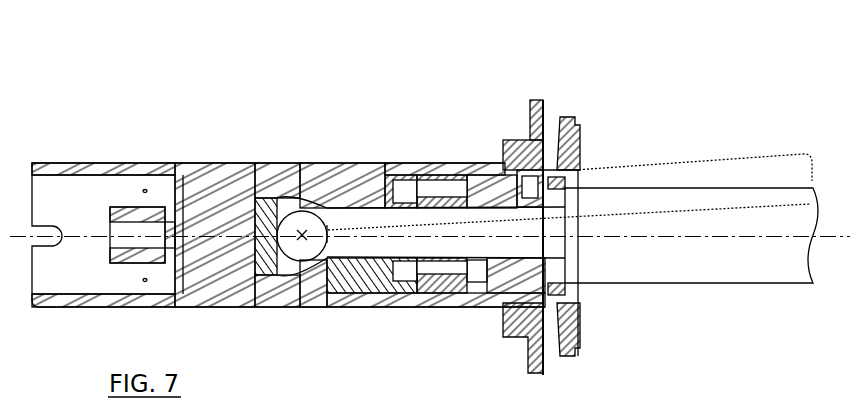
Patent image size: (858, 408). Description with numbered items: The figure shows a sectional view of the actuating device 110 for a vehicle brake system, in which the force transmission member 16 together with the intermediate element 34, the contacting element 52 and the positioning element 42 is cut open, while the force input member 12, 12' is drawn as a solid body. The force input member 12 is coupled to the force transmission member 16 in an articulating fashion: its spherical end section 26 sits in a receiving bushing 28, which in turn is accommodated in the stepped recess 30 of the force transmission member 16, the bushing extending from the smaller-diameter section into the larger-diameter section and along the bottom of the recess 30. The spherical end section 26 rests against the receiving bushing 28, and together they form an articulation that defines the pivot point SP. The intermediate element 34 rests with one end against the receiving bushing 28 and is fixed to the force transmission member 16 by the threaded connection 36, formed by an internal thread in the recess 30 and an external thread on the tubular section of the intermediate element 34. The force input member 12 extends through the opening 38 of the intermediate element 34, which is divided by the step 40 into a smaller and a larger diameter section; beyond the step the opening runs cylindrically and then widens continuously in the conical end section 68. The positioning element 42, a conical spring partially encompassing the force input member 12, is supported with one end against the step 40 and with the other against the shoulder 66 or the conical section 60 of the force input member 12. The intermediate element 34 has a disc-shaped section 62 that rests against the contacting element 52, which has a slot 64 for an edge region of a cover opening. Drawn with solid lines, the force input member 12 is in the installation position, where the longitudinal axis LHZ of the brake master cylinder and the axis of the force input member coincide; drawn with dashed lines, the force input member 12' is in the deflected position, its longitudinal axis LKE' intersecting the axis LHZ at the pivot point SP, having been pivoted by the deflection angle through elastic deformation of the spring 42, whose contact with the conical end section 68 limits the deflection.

The force input member 12 is at (691, 266).
The force input member in deflected position 12' is at (575, 164).
The force transmission member 16 is at (278, 174).
The spherical end section 26 is at (312, 262).
The receiving bushing 28 is at (274, 272).
The recess 30 is at (373, 195).
The intermediate element 34 is at (534, 103).
The threaded connection 36 is at (432, 293).
The opening 38 is at (429, 180).
The step 40 is at (462, 180).
The positioning element 42 is at (468, 293).
The contacting element 52 is at (580, 142).
The conical section 60 is at (617, 403).
The disc-shaped section 62 is at (533, 347).
The slot 64 is at (562, 118).
The shoulder 66 is at (565, 190).
The conical end section 68 is at (527, 285).
The actuating device 110 is at (610, 72).
The pivot point SP is at (304, 235).
The longitudinal axis of the force input member in deflected position LKE' is at (745, 148).
The longitudinal axis of the brake master cylinder LHZ is at (783, 238).